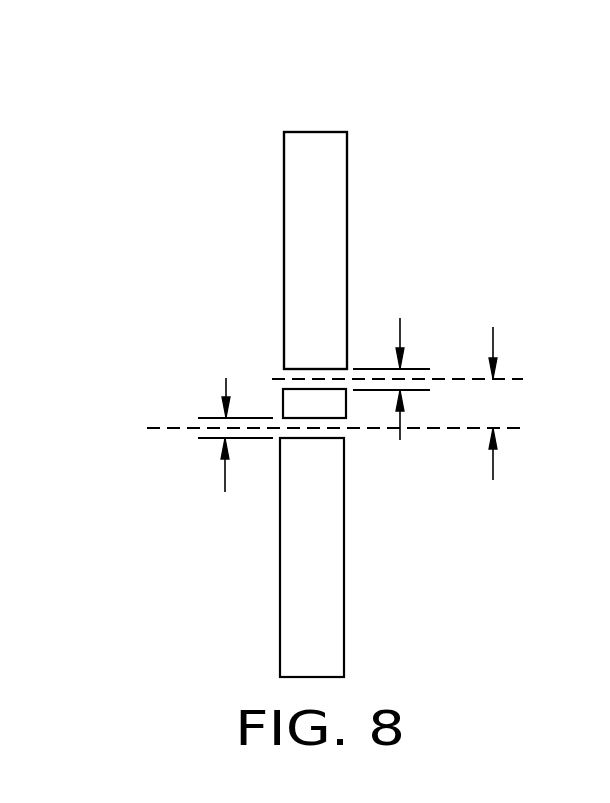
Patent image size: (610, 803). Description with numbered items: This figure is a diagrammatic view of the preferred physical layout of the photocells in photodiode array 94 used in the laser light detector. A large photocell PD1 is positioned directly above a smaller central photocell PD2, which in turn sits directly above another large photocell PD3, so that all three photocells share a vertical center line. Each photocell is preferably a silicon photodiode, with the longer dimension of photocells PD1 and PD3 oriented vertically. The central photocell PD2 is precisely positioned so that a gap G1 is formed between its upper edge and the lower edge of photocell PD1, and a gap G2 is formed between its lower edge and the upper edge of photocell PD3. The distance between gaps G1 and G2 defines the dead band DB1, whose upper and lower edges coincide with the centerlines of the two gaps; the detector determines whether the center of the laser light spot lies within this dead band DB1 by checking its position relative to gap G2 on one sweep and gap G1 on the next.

The photodiode array 94 is at (293, 110).
The photocell PD1 is at (337, 165).
The central photocell PD2 is at (290, 403).
The photocell PD3 is at (327, 578).
The gap G1 is at (400, 330).
The gap G2 is at (225, 480).
The dead band DB1 is at (493, 466).